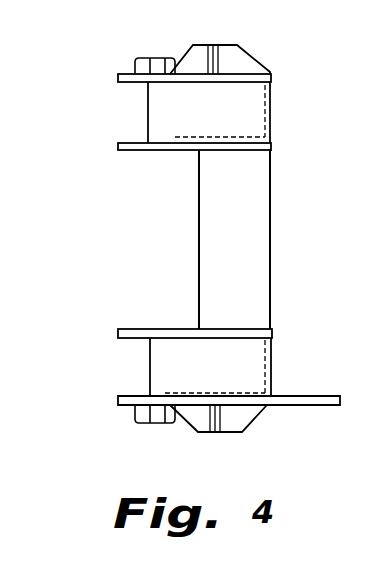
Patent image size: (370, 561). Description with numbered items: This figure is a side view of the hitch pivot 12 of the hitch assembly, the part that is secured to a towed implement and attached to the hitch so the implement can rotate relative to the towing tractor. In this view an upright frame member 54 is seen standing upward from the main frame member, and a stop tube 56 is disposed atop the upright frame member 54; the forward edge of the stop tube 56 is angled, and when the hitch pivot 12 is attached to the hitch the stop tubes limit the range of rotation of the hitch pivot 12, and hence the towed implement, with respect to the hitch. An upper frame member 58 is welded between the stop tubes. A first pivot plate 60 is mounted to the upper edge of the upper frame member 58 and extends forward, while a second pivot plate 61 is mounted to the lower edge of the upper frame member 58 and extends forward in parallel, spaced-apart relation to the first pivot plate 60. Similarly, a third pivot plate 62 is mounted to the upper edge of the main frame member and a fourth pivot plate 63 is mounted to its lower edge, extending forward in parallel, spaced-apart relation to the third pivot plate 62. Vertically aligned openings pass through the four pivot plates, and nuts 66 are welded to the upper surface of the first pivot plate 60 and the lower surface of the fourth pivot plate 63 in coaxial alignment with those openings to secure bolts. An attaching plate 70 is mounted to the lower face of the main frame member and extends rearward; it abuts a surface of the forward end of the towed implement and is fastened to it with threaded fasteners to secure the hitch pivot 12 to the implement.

The hitch pivot 12 is at (116, 224).
The upright frame member 54 is at (262, 252).
The stop tube 56 is at (148, 118).
The upper frame member 58 is at (271, 110).
The first pivot plate 60 is at (118, 75).
The second pivot plate 61 is at (118, 151).
The third pivot plate 62 is at (148, 333).
The fourth pivot plate 63 is at (118, 402).
The nut 66 is at (150, 422).
The attaching plate 70 is at (306, 396).